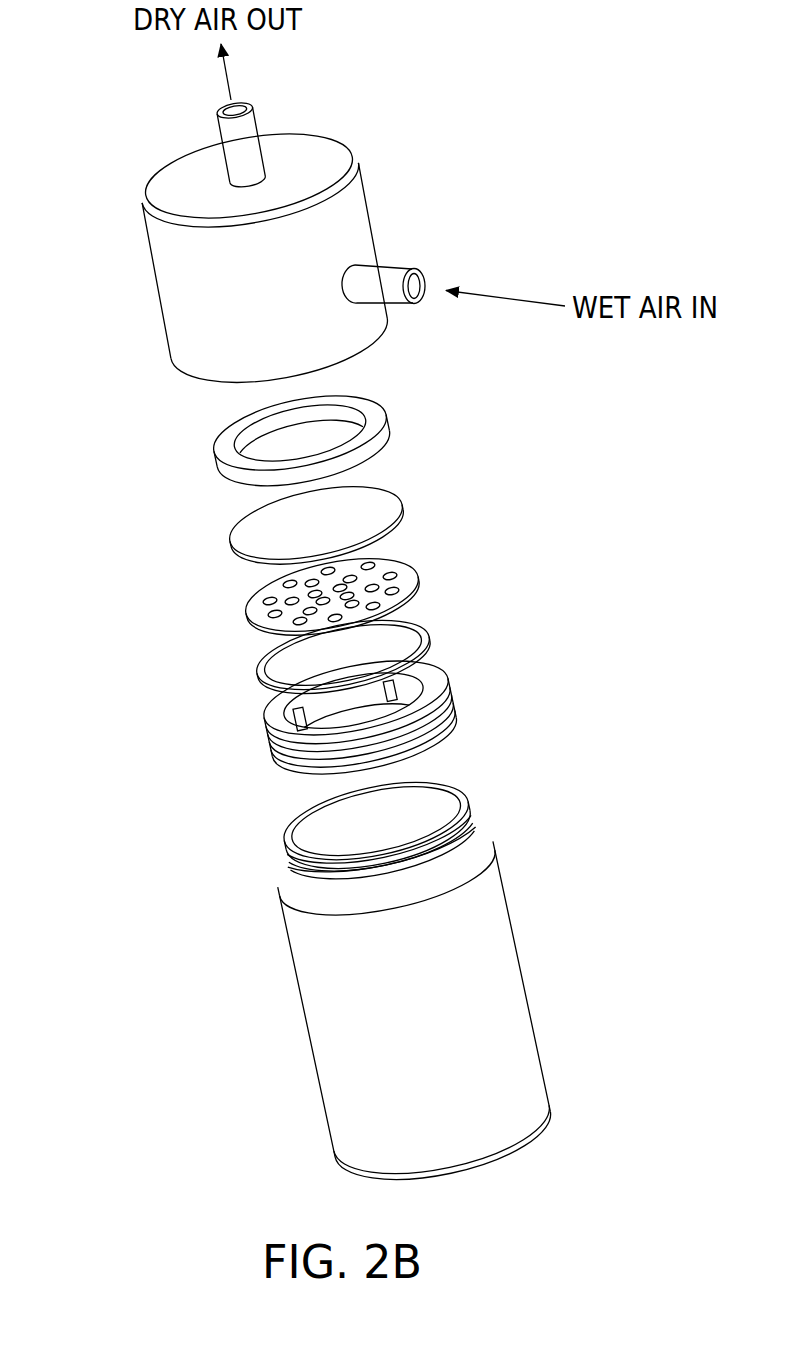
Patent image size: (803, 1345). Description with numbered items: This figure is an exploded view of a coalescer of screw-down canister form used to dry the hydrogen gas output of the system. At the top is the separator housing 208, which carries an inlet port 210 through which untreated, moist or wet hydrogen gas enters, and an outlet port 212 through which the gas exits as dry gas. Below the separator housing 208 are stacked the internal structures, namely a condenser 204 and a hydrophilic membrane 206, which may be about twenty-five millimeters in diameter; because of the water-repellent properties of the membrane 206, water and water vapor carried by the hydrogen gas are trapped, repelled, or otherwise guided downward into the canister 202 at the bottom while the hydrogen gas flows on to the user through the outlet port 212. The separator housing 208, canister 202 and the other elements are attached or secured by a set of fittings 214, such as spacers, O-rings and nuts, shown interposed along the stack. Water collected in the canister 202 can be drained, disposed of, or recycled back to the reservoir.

The canister 202 is at (325, 1125).
The condenser 204 is at (245, 612).
The hydrophilic membrane 206 is at (408, 501).
The separator housing 208 is at (158, 307).
The inlet port 210 is at (391, 266).
The outlet port 212 is at (258, 128).
The fittings 214 is at (213, 470).